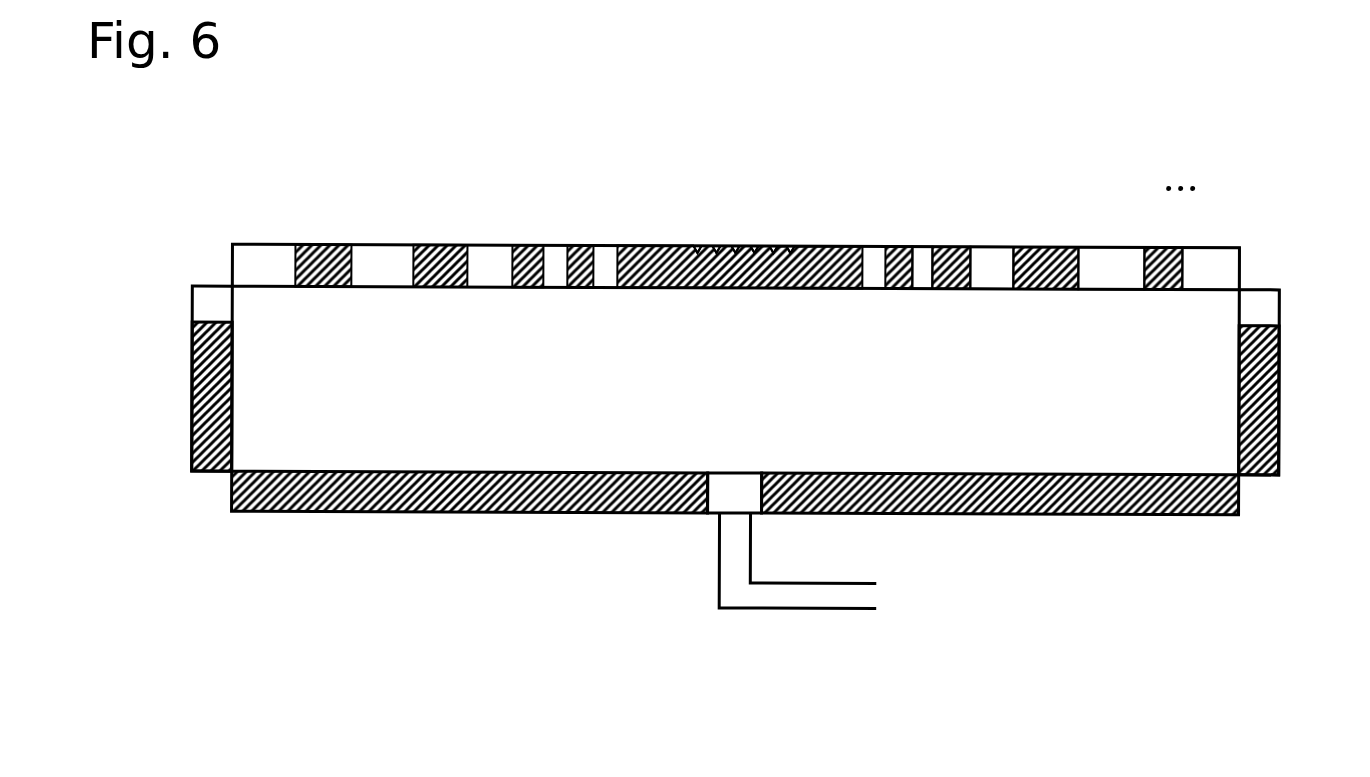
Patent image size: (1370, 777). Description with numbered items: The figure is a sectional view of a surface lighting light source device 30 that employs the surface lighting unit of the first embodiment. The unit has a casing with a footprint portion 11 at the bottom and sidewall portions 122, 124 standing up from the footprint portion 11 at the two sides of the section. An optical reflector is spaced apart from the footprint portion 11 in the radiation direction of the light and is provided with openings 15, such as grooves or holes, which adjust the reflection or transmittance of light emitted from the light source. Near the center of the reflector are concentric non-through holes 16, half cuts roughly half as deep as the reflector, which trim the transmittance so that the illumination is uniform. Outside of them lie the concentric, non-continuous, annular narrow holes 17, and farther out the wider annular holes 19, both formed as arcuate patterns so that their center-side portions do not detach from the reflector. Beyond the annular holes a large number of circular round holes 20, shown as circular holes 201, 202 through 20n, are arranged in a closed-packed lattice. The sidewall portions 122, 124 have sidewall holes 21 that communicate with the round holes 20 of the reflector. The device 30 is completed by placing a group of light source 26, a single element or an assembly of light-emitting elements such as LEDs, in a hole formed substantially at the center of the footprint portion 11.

The surface lighting light source device 30 is at (331, 190).
The openings 15 is at (1253, 108).
The non-through holes 16 is at (790, 250).
The narrow holes 17 is at (833, 248).
The annular holes 19 is at (918, 264).
The round holes 20 is at (1272, 177).
The circular hole 201 is at (988, 250).
The circular hole 202 is at (1093, 250).
The circular hole 20n is at (1205, 250).
The sidewall holes 21 is at (1257, 300).
The sidewall portion 122 is at (1323, 401).
The sidewall portion 124 is at (192, 381).
The footprint portion 11 is at (1003, 513).
The group of light source 26 is at (740, 487).